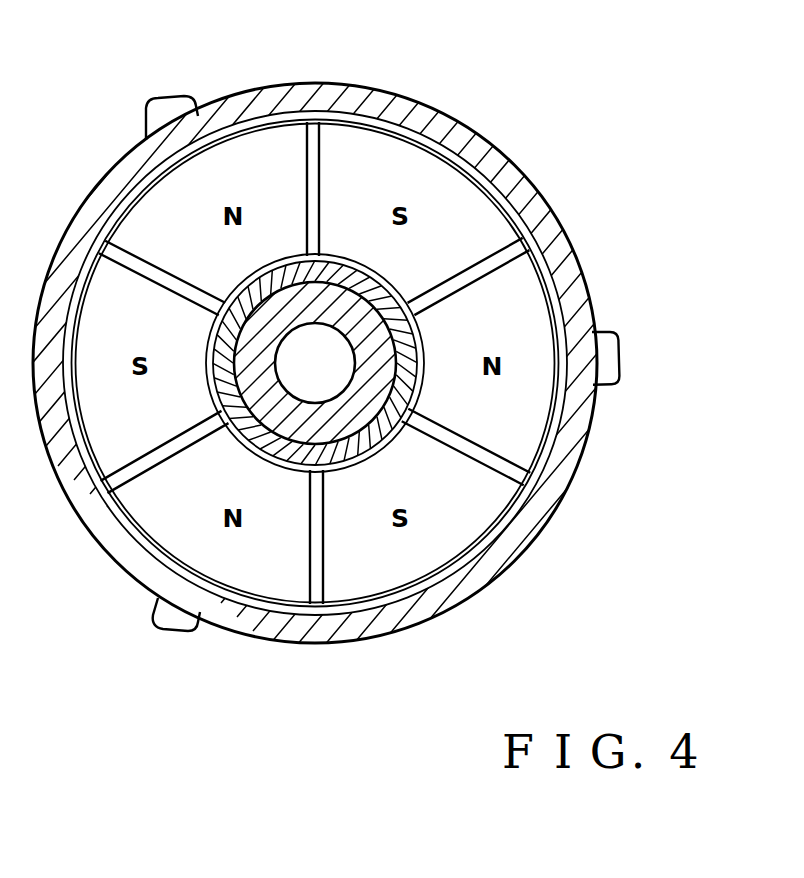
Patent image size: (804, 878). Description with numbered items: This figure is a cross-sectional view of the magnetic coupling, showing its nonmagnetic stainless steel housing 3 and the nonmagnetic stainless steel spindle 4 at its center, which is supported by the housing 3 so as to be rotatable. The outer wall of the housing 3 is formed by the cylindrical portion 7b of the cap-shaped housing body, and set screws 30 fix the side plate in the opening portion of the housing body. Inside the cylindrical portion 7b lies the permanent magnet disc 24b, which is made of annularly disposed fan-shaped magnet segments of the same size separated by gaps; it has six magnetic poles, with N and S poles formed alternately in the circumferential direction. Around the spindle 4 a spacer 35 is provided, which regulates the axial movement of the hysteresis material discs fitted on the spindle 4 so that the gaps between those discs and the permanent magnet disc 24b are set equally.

The housing 3 is at (537, 162).
The spindle 4 is at (380, 340).
The cylindrical portion 7b is at (90, 522).
The permanent magnet disc 24b is at (470, 550).
The set screw 30 is at (165, 115).
The spacer 35 is at (403, 382).